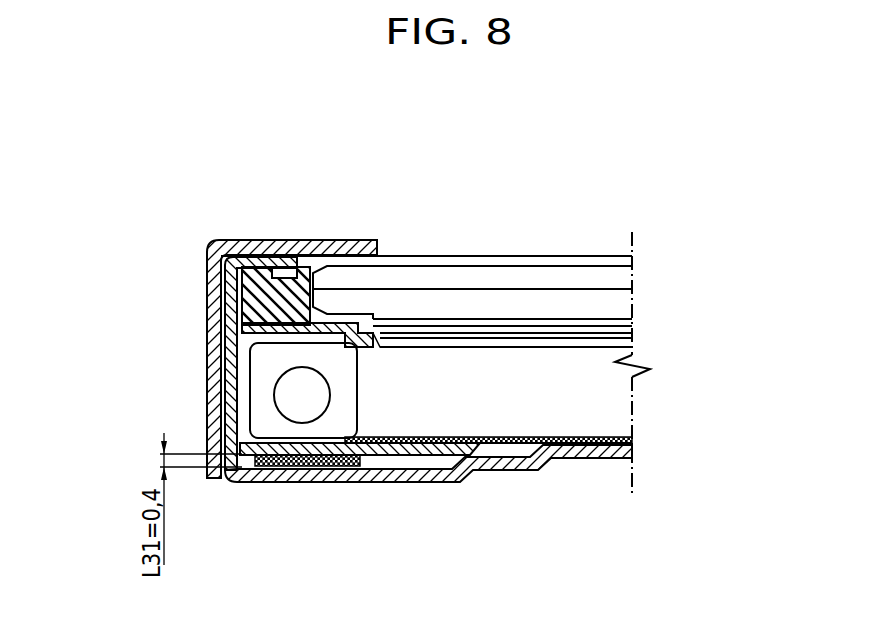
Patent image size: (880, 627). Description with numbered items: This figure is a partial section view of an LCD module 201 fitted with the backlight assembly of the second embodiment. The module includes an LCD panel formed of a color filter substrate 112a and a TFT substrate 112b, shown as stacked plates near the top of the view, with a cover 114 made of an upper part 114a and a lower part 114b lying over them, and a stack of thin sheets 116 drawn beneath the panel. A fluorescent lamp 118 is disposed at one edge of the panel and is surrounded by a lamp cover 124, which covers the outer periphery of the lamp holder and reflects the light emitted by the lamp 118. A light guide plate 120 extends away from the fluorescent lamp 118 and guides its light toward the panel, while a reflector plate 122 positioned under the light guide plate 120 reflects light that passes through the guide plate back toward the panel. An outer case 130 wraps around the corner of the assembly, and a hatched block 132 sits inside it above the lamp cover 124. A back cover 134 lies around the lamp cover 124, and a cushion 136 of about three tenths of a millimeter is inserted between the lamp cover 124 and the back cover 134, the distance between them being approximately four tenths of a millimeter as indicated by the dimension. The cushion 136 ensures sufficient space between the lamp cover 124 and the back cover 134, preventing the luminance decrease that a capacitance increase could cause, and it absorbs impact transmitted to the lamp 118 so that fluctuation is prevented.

The LCD module 201 is at (566, 212).
The outer case 130 is at (217, 246).
The cushion member 132 is at (243, 287).
The back cover 134 is at (246, 336).
The lamp cover 124 is at (243, 395).
The fluorescent lamp 118 is at (280, 410).
The cushion 136 is at (322, 467).
The reflector plate 122 is at (613, 440).
The cover member 114 is at (498, 174).
The upper cover plate 114a is at (403, 257).
The lower cover plate 114b is at (456, 322).
The color filter substrate 112a is at (626, 277).
The TFT substrate 112b is at (626, 307).
The optical sheets 116 is at (636, 322).
The light guide plate 120 is at (617, 402).